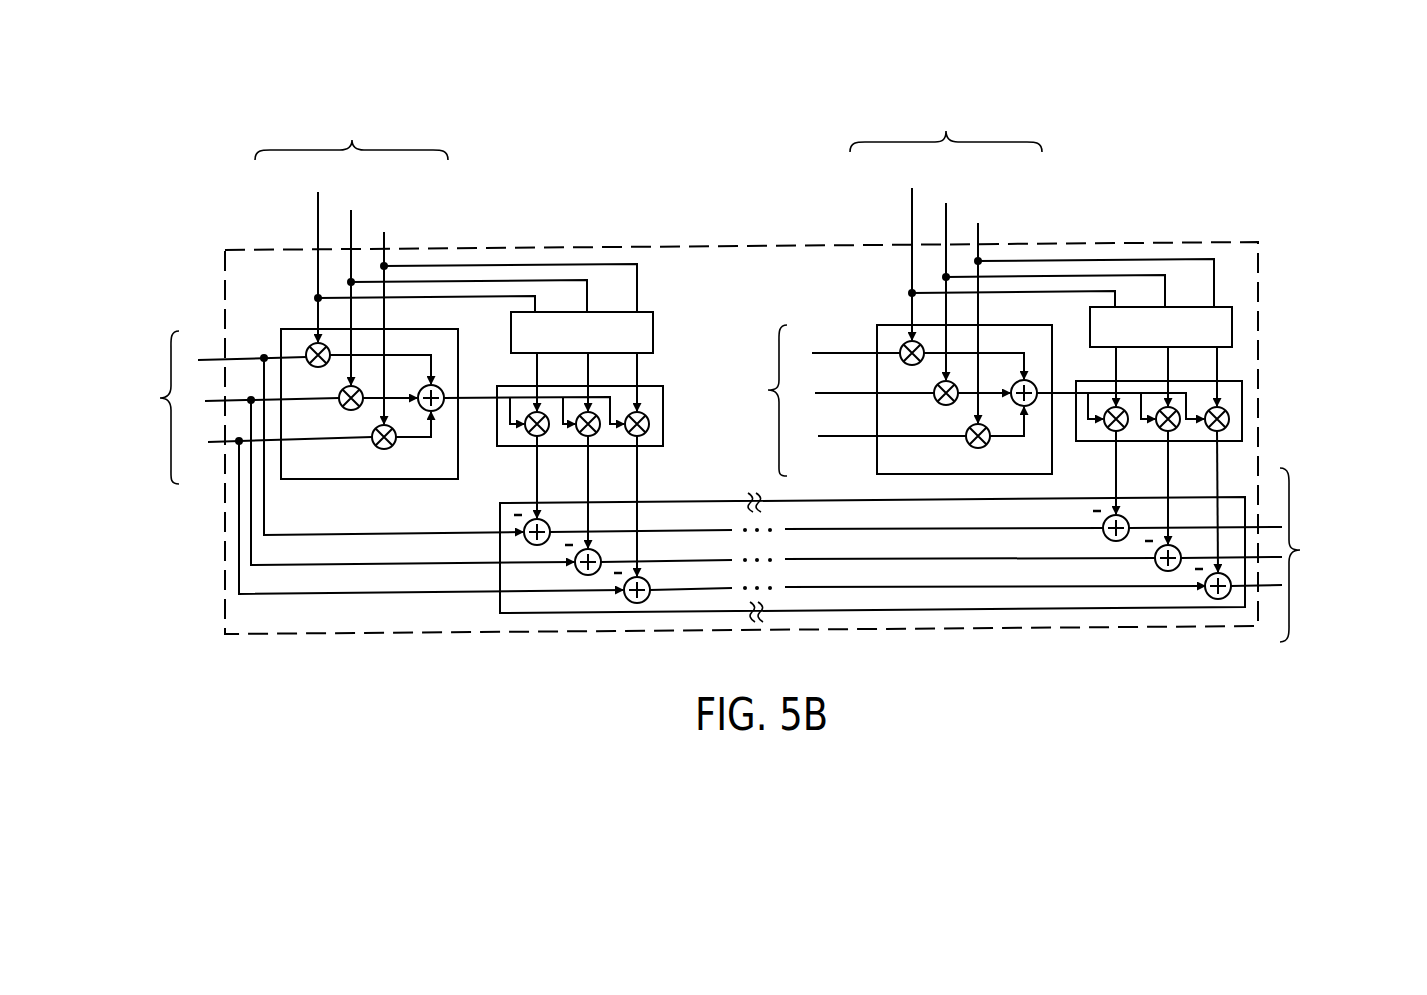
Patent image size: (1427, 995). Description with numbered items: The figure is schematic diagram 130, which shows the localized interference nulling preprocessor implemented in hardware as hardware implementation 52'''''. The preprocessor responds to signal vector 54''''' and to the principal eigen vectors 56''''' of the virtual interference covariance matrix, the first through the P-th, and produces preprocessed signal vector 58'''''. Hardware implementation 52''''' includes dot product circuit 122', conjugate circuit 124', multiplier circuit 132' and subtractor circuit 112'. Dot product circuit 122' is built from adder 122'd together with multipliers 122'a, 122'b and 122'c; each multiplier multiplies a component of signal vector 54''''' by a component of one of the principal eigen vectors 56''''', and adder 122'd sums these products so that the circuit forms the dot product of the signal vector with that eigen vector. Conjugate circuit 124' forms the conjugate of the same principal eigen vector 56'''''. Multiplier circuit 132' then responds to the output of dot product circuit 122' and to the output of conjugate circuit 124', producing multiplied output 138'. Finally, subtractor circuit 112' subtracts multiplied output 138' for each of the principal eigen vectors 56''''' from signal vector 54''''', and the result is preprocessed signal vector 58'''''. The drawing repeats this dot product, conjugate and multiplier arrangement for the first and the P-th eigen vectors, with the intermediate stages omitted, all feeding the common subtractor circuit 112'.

The schematic diagram 130 is at (698, 38).
The hardware implementation of localized interference nulling preprocessor 52''''' is at (709, 438).
The signal vector 54''''' is at (526, 459).
The principal eigen vectors 56''''' is at (721, 245).
The preprocessed signal vector 58''''' is at (1268, 555).
The subtractor circuit 112' is at (844, 557).
The dot product circuit 122' is at (369, 427).
The multiplier 122'a is at (313, 369).
The multiplier 122'b is at (327, 410).
The multiplier 122'c is at (412, 448).
The adder 122'd is at (400, 370).
The conjugate circuit 124' is at (608, 316).
The multiplier circuit 132' is at (553, 437).
The multiplied output 138' is at (582, 464).